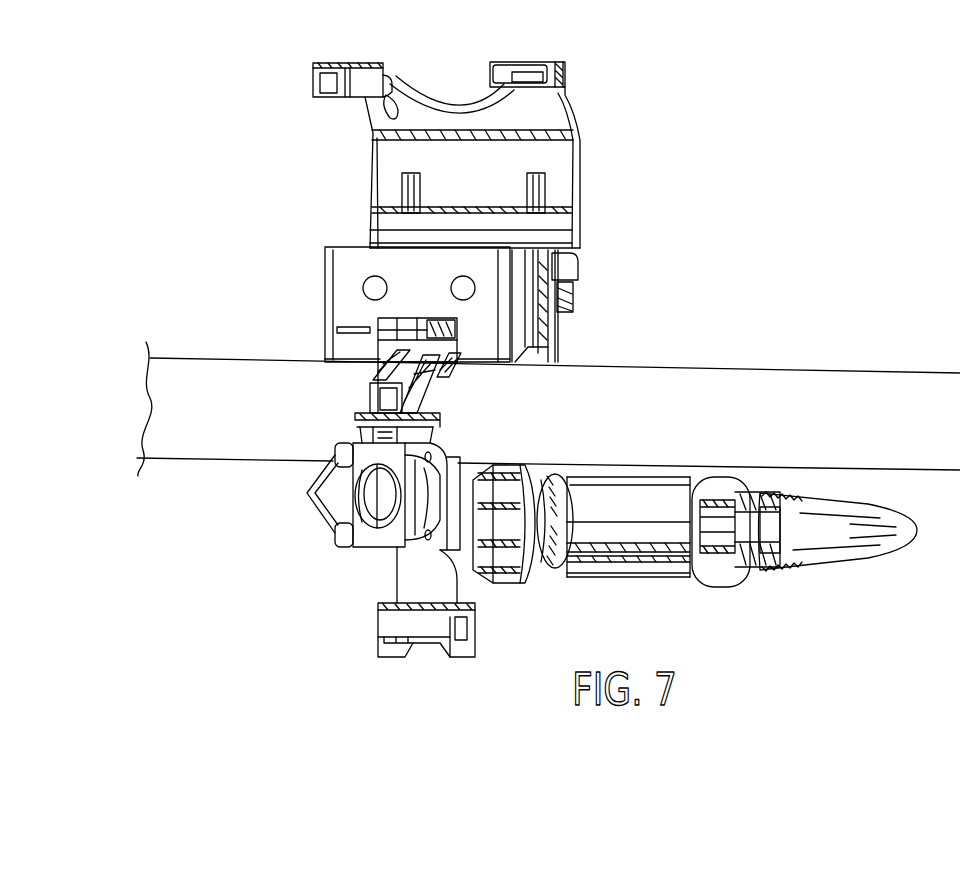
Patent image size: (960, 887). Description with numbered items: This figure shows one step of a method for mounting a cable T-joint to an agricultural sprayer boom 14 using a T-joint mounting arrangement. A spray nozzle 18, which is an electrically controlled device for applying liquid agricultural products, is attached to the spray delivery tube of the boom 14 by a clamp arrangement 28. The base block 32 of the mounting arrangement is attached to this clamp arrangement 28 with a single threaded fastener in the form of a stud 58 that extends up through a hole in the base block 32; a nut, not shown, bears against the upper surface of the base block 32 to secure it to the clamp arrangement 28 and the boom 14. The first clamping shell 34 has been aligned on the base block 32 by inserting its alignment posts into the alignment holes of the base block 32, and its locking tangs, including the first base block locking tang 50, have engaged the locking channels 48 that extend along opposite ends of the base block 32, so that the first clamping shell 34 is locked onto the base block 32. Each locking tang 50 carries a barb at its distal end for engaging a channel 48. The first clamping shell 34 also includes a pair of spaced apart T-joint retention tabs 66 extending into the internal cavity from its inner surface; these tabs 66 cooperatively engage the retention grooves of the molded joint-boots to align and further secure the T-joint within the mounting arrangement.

The boom 14 is at (808, 388).
The spray nozzle 18 is at (428, 653).
The clamp arrangement 28 is at (370, 407).
The base block 32 is at (555, 338).
The first clamping shell 34 is at (556, 168).
The locking channel 48 is at (545, 303).
The first base block locking tang 50 is at (567, 265).
The stud 58 is at (440, 330).
The T-joint retention tab 66 is at (527, 188).